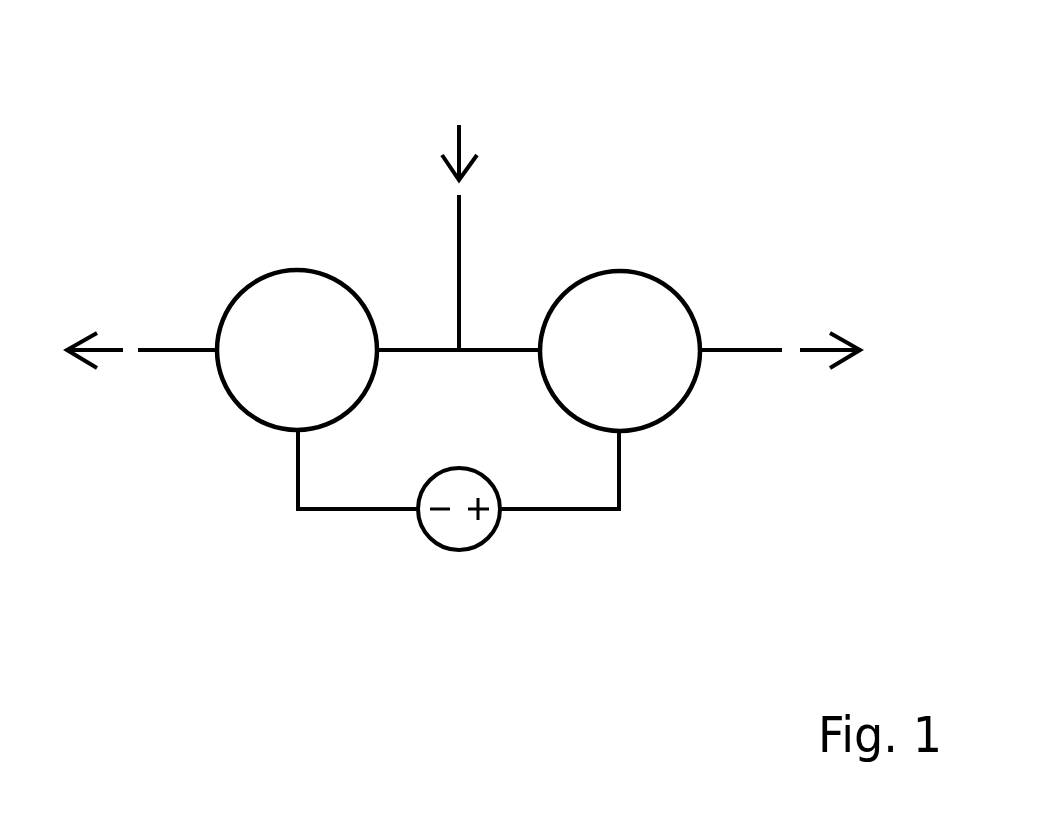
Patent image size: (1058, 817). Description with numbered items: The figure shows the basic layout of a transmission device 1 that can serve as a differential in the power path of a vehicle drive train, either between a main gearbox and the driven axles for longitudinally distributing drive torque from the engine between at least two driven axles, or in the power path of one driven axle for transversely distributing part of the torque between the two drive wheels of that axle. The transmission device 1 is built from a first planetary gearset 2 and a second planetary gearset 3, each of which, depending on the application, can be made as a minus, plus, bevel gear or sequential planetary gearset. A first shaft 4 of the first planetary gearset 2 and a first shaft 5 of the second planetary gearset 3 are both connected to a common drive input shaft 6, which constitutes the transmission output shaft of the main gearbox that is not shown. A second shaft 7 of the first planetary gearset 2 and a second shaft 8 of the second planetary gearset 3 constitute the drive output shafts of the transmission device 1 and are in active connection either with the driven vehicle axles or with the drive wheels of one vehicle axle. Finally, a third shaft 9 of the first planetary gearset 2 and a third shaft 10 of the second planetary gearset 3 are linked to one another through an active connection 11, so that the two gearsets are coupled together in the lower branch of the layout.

The transmission device 1 is at (463, 320).
The first planetary gearset 2 is at (273, 272).
The second planetary gearset 3 is at (662, 278).
The first shaft of the first planetary gearset 4 is at (430, 347).
The first shaft of the second planetary gearset 5 is at (513, 348).
The drive input shaft 6 is at (462, 247).
The second shaft of the first planetary gearset 7 is at (193, 347).
The second shaft of the second planetary gearset 8 is at (735, 347).
The third shaft of the first planetary gearset 9 is at (297, 477).
The third shaft of the second planetary gearset 10 is at (621, 462).
The active connection 11 is at (488, 553).